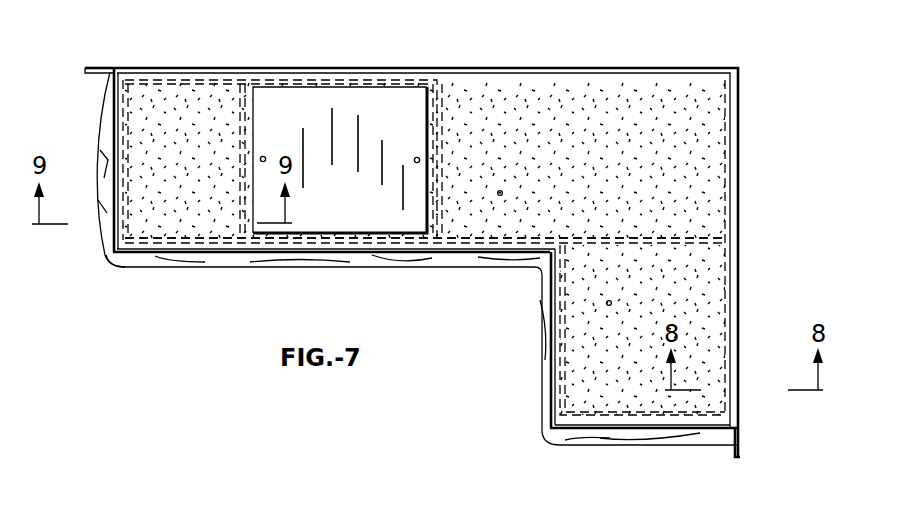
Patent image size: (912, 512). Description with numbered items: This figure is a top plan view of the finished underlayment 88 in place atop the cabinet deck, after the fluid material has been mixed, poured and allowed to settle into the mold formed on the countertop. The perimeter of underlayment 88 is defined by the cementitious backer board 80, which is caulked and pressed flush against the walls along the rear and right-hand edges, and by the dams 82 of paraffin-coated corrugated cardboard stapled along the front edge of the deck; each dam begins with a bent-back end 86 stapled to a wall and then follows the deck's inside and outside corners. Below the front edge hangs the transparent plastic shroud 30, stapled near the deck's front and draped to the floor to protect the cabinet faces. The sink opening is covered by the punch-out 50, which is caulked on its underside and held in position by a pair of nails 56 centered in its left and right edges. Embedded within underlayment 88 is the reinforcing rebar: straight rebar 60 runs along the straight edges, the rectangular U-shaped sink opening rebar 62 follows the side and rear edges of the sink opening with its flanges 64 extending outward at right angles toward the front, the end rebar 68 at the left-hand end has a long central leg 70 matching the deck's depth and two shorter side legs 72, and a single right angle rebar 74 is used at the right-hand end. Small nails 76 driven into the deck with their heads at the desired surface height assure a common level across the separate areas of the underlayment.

The plastic shroud 30 is at (218, 270).
The punch-out 50 is at (406, 122).
The nails 56 is at (261, 158).
The straight rebar 60 is at (642, 238).
The sink opening rebar 62 is at (328, 82).
The flanges 64 is at (218, 238).
The end rebar 68 is at (105, 133).
The central leg 70 is at (118, 222).
The side legs 72 is at (156, 82).
The right angle rebar 74 is at (540, 337).
The nail 76 is at (502, 192).
The cementitious backer board 80 is at (615, 68).
The dams 82 is at (508, 257).
The end 86 is at (85, 68).
The underlayment 88 is at (168, 145).